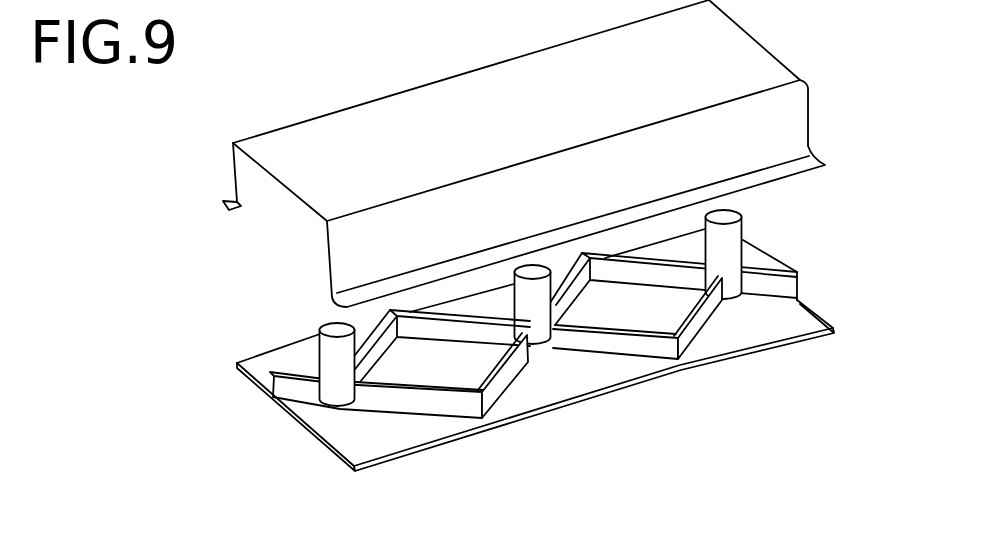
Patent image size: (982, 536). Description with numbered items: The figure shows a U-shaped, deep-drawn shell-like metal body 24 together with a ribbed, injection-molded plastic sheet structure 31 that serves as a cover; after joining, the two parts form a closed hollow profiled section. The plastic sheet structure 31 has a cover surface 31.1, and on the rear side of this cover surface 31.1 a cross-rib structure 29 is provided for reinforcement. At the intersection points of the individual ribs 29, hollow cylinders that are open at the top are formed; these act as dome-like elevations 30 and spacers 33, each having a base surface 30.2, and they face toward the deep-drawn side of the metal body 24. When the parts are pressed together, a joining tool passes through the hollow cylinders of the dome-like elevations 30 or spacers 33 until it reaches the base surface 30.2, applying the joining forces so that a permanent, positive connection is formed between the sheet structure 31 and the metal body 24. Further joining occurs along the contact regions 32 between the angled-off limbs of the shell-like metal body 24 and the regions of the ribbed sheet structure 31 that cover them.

The shell-like metal body 24 is at (318, 148).
The cross-rib structure 29 is at (792, 288).
The dome-like elevation 30 is at (252, 333).
The base surface 30.2 is at (305, 298).
The plastic sheet structure 31 is at (560, 337).
The cover surface 31.1 is at (368, 430).
The contact regions 32 is at (224, 376).
The spacer 33 is at (727, 248).